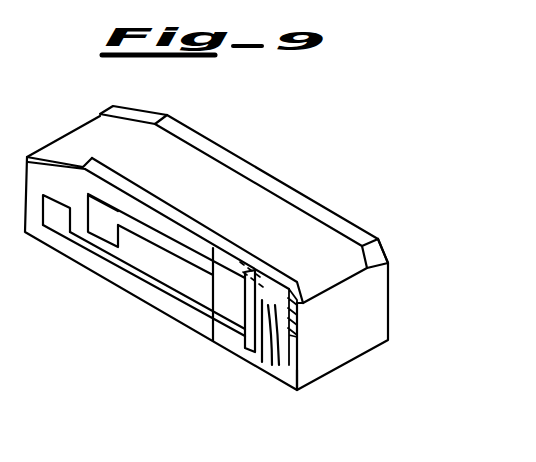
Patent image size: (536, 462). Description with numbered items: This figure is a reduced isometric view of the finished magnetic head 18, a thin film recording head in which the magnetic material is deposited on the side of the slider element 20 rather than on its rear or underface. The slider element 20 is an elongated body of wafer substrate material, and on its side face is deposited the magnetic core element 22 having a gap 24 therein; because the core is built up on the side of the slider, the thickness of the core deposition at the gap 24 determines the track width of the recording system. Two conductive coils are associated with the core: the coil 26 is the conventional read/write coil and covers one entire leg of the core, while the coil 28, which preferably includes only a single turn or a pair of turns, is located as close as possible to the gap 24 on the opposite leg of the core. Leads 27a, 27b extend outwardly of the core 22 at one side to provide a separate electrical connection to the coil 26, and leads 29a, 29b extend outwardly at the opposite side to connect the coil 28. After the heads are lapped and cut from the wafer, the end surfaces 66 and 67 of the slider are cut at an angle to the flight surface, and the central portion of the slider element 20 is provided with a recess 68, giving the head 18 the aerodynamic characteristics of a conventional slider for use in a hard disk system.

The magnetic head 18 is at (250, 156).
The slider element 20 is at (292, 170).
The magnetic core element 22 is at (262, 363).
The gap 24 is at (239, 280).
The coil 26 is at (225, 313).
The lead 27a is at (107, 230).
The lead 27b is at (54, 222).
The coil 28 is at (270, 342).
The lead 29a is at (303, 310).
The lead 29b is at (300, 378).
The end surface 66 is at (110, 106).
The end surface 67 is at (364, 265).
The recess 68 is at (200, 187).